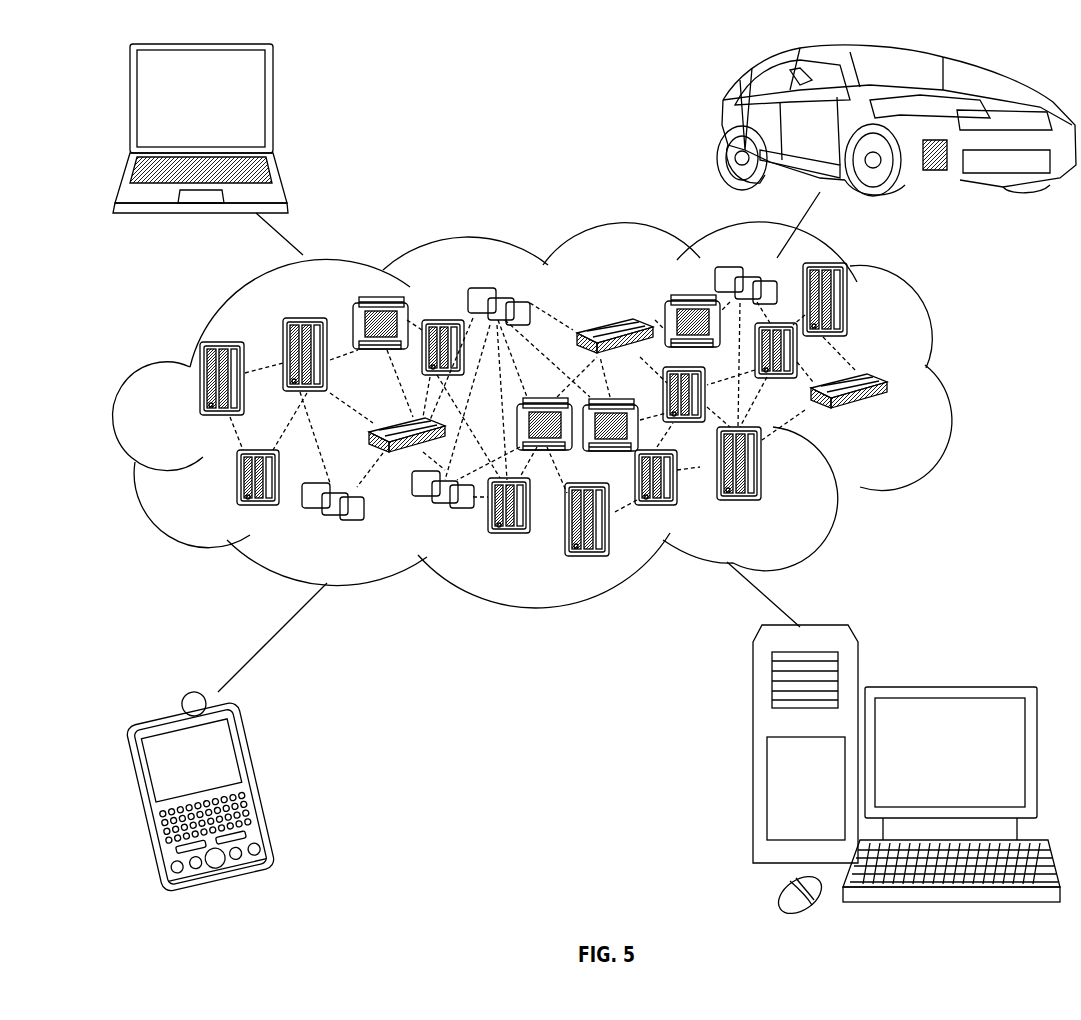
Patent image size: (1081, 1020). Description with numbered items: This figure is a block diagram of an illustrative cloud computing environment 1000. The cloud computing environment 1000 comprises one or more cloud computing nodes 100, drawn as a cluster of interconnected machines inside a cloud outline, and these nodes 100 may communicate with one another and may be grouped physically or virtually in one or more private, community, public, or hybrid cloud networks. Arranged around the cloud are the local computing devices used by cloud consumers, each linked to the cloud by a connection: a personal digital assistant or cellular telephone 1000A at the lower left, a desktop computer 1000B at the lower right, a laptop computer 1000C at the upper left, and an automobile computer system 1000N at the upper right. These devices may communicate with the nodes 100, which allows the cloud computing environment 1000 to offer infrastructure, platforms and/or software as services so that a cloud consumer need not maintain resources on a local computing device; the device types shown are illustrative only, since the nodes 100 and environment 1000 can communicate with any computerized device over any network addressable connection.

The cloud computing environment 1000 is at (950, 387).
The cloud computing nodes 100 is at (893, 421).
The personal digital assistant (PDA) or cellular telephone 1000A is at (260, 783).
The desktop computer 1000B is at (948, 683).
The laptop computer 1000C is at (281, 107).
The automobile computer system 1000N is at (720, 122).